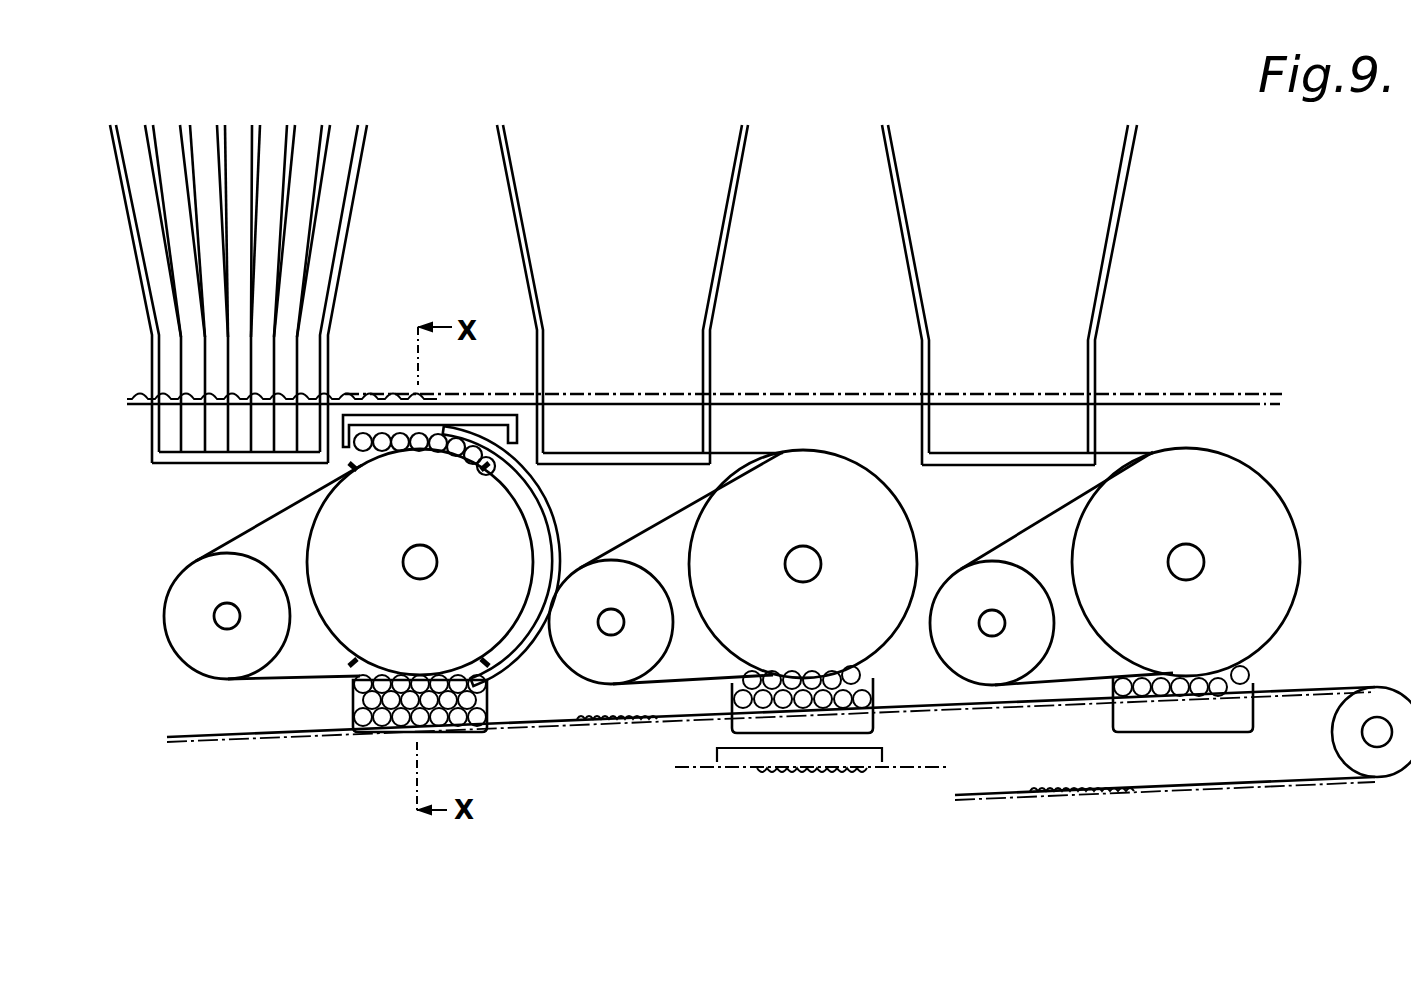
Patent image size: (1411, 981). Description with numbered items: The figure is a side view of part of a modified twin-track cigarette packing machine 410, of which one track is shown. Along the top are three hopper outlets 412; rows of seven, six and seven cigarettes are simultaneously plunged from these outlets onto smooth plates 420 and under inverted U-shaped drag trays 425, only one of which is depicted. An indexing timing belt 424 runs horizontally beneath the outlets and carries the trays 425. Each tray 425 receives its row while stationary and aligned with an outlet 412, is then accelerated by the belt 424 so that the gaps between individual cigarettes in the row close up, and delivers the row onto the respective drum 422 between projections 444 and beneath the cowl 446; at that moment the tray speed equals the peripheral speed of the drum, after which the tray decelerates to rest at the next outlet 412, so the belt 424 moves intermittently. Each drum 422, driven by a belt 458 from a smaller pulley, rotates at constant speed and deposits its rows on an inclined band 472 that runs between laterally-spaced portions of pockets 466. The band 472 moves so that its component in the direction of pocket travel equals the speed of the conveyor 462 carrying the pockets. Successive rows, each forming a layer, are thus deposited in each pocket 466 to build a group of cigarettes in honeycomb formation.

The apparatus 410 is at (607, 89).
The hopper outlet 412 is at (337, 293).
The smooth plate 420 is at (197, 453).
The drum 422 is at (370, 575).
The indexing timing belt 424 is at (804, 403).
The inverted U-shaped drag tray 425 is at (498, 417).
The projection 444 is at (478, 474).
The cowl 446 is at (555, 530).
The belt 458 is at (273, 517).
The conveyor 462 is at (893, 769).
The pocket 466 is at (488, 703).
The inclined band 472 is at (1311, 684).